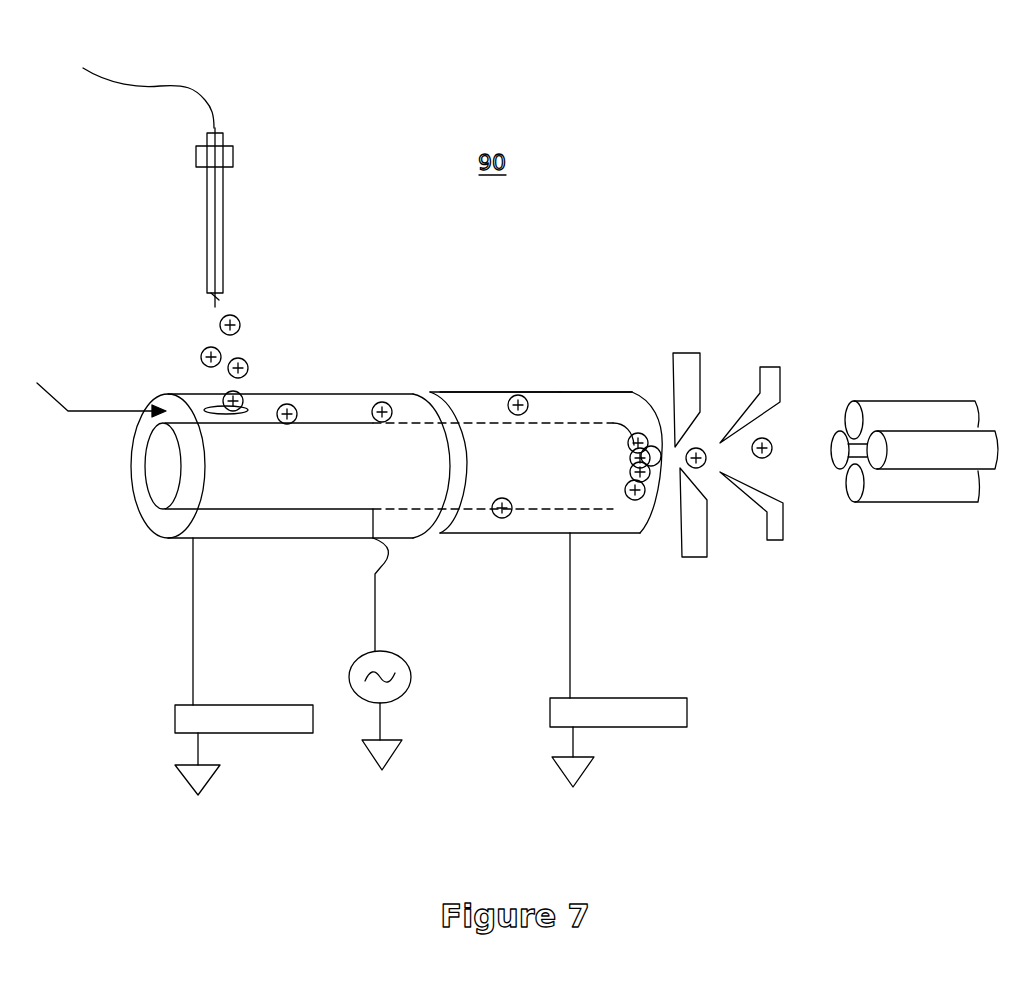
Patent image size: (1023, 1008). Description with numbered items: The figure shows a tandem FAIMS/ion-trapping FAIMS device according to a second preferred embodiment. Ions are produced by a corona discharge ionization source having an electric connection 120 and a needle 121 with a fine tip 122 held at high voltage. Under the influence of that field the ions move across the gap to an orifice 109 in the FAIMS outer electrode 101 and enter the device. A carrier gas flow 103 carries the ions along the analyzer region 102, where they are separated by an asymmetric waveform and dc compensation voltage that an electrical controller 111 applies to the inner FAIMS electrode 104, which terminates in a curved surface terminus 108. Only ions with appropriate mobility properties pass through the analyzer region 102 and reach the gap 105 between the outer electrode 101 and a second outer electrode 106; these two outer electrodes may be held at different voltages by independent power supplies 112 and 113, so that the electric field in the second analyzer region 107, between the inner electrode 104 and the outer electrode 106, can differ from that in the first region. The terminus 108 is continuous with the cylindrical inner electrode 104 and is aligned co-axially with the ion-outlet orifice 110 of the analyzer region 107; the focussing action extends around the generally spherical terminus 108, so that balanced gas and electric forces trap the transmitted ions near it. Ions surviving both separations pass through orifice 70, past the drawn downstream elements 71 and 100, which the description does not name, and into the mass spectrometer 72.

The orifice 70 is at (701, 530).
The lens electrode 71 is at (805, 357).
The mass spectrometer 72 is at (914, 529).
The lens electrode 100 is at (720, 472).
The FAIMS outer electrode 101 is at (290, 413).
The analyzer region 102 is at (389, 404).
The carrier gas flow 103 is at (101, 467).
The inner FAIMS electrode 104 is at (121, 568).
The gap 105 is at (541, 405).
The FAIMS outer electrode 106 is at (591, 301).
The analyzer region 107 is at (670, 321).
The curved surface terminus 108 is at (625, 463).
The orifice 109 is at (161, 350).
The ion-outlet orifice 110 is at (663, 452).
The electrical controller 111 is at (430, 694).
The power supply 112 is at (257, 706).
The power supply 113 is at (641, 697).
The electric connection 120 is at (233, 96).
The needle 121 is at (284, 217).
The fine tip 122 is at (297, 281).